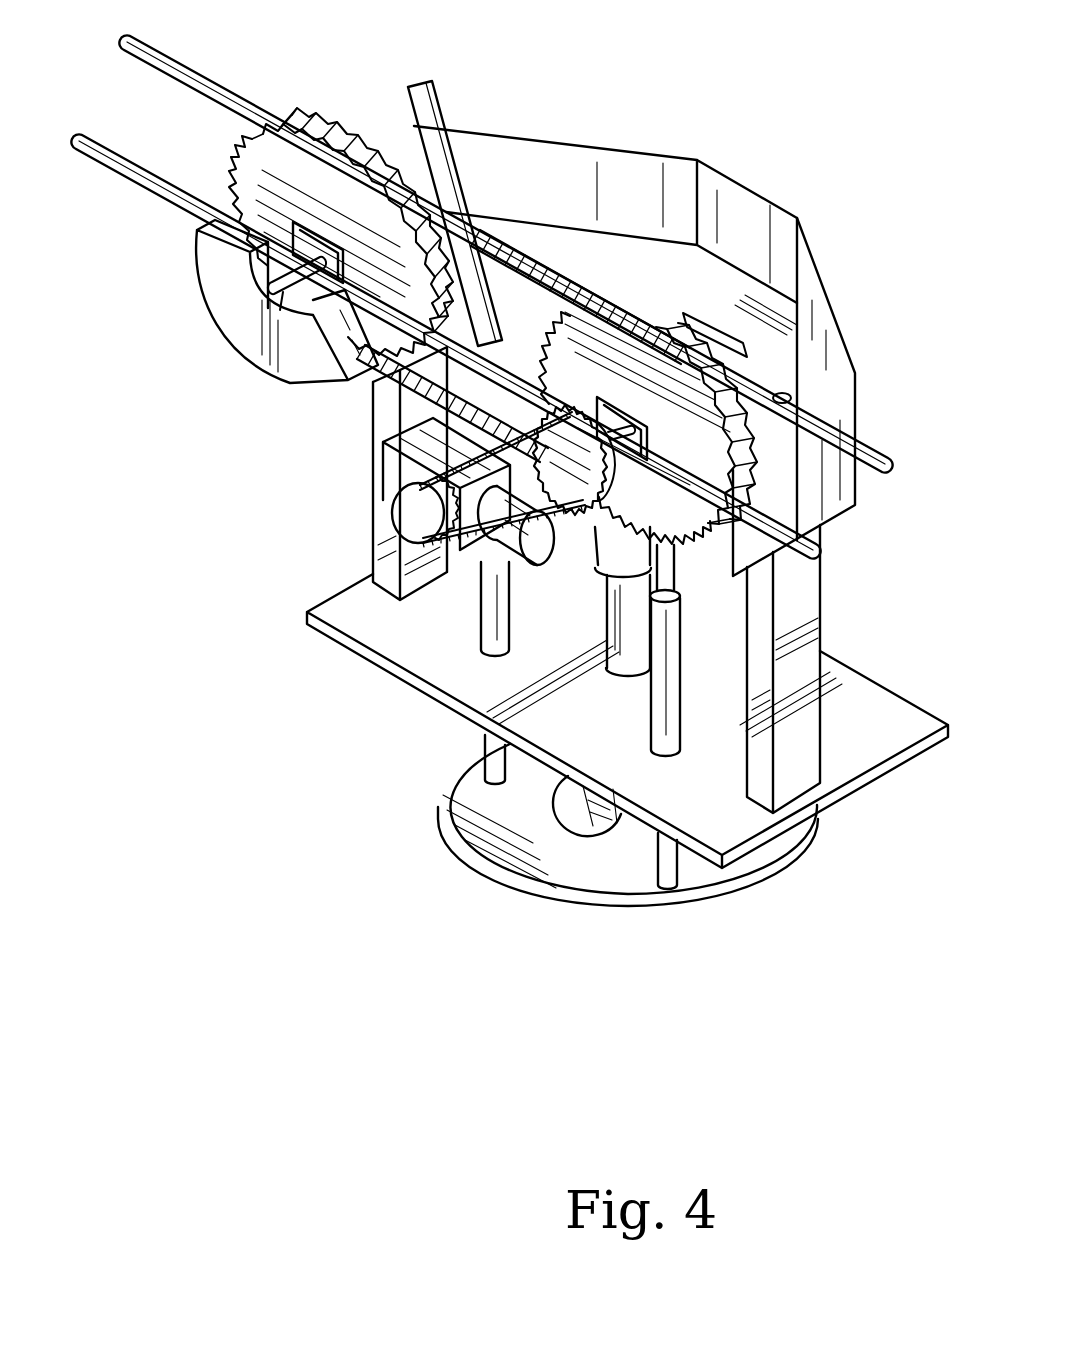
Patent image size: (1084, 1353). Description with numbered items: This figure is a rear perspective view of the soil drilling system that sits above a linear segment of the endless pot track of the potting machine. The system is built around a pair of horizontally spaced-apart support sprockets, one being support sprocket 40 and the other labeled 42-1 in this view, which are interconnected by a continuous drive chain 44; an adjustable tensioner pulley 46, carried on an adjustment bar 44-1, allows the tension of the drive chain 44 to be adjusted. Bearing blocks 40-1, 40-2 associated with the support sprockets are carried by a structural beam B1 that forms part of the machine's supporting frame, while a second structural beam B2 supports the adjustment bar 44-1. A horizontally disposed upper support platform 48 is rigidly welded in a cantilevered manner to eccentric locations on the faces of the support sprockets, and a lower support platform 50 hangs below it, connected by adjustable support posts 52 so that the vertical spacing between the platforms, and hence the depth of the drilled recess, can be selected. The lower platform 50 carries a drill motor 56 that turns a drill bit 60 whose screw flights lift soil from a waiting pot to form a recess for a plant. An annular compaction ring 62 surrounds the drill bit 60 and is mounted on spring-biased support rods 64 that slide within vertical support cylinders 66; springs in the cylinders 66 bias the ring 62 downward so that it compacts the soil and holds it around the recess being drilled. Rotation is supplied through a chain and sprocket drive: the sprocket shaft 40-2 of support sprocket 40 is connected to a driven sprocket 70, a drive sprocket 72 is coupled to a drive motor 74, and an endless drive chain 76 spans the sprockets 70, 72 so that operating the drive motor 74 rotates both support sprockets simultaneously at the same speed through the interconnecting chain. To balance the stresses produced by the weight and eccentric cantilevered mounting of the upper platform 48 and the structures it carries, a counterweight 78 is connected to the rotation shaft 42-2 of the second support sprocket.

The structural beam B1 is at (124, 168).
The structural beam B2 is at (203, 80).
The support sprocket 40 is at (706, 468).
The bearing block 40-1 is at (655, 518).
The sprocket shaft 40-2 is at (598, 418).
The driven gear 42-1 is at (246, 186).
The rotation shaft 42-2 is at (343, 268).
The drive chain 44 is at (478, 220).
The adjustment bar 44-1 is at (408, 96).
The tensioner pulley 46 is at (587, 282).
The upper support platform 48 is at (802, 373).
The lower support platform 50 is at (428, 658).
The adjustable support posts 52 is at (378, 407).
The drill motor 56 is at (610, 530).
The drill bit 60 is at (578, 815).
The compaction ring 62 is at (613, 887).
The support rods 64 is at (490, 762).
The support cylinders 66 is at (490, 620).
The driven sprocket 70 is at (586, 497).
The drive sprocket 72 is at (412, 516).
The drive motor 74 is at (393, 462).
The drive chain 76 is at (520, 552).
The counterweight 78 is at (252, 322).